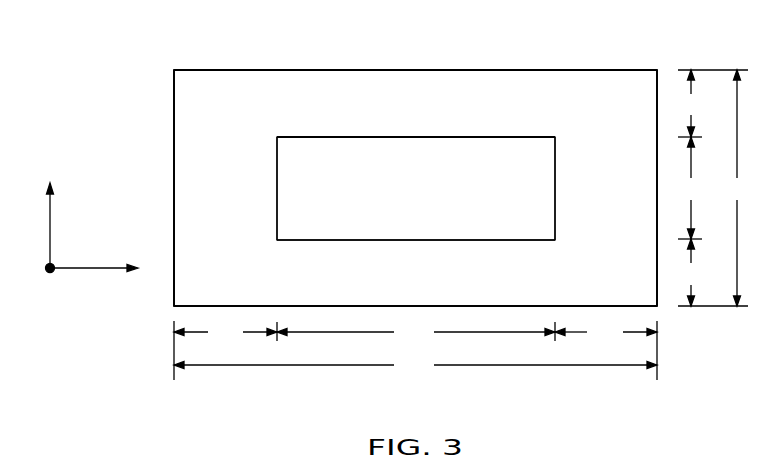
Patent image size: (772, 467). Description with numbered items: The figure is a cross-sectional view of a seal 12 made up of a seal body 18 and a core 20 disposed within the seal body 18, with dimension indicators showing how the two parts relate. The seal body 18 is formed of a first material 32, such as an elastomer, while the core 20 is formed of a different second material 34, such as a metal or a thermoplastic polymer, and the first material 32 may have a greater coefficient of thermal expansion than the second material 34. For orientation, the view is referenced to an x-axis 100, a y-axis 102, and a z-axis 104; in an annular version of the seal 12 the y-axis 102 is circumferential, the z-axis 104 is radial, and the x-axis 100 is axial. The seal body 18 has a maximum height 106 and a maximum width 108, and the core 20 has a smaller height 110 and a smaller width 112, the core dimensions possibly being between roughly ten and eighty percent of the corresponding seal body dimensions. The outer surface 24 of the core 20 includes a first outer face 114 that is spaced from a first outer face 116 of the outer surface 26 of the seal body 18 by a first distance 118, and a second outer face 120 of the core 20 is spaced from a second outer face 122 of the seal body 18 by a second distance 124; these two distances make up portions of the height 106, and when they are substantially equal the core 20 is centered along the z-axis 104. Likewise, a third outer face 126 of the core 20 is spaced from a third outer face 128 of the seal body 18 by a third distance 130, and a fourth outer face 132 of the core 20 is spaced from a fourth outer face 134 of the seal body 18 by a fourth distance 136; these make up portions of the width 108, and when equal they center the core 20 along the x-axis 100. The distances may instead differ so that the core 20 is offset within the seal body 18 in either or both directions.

The seal 12 is at (115, 93).
The seal body 18 is at (579, 70).
The outer surface 26 is at (255, 70).
The first outer face 116 is at (411, 70).
The second outer face 122 is at (416, 306).
The fourth outer face 134 is at (174, 140).
The third outer face 128 is at (657, 140).
The first material 32 is at (600, 111).
The second material 34 is at (437, 198).
The outer surface 24 is at (306, 137).
The core 20 is at (524, 137).
The first outer face 114 is at (420, 137).
The second outer face 120 is at (420, 240).
The fourth outer face 132 is at (277, 190).
The third outer face 126 is at (555, 190).
The first distance 118 is at (691, 103).
The height 110 is at (691, 188).
The second distance 124 is at (691, 272).
The height 106 is at (737, 188).
The fourth distance 136 is at (225, 332).
The width 112 is at (416, 332).
The third distance 130 is at (606, 332).
The width 108 is at (415, 365).
The x-axis 100 is at (88, 269).
The y-axis 102 is at (44, 270).
The z-axis 104 is at (50, 228).